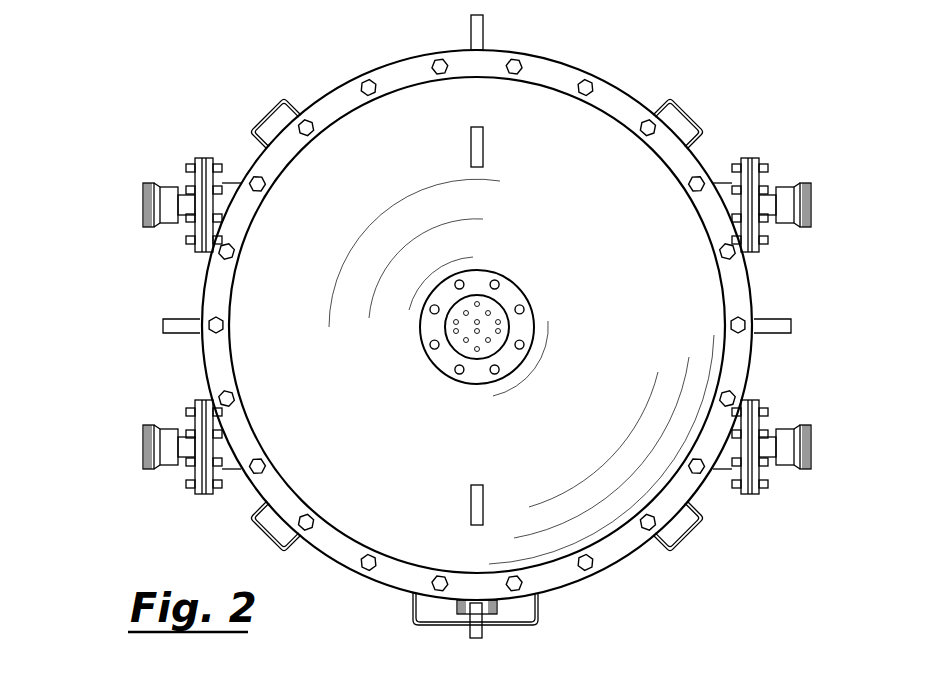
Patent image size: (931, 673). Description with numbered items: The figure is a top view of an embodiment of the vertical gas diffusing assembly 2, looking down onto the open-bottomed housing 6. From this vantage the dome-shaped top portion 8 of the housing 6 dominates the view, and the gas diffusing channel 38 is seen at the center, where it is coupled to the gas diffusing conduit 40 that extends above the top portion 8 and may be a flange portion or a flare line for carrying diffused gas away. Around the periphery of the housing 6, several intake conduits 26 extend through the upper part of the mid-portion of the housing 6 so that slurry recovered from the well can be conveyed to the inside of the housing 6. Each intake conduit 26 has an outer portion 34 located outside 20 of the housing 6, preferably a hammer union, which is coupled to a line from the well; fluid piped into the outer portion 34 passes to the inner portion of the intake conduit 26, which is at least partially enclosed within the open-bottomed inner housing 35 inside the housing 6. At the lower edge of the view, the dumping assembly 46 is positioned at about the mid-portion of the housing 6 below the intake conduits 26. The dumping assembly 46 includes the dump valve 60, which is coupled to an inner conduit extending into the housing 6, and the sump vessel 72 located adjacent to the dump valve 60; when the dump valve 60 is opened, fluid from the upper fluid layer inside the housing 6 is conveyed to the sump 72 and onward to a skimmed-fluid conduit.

The vertical gas diffusing assembly 2 is at (714, 85).
The open-bottomed housing 6 is at (580, 265).
The top portion 8 is at (557, 127).
The outside 20 is at (320, 75).
The intake conduit 26 is at (143, 207).
The outer portion 34 is at (170, 190).
The open-bottomed inner housing 35 is at (318, 660).
The gas diffusing channel 38 is at (467, 302).
The gas diffusing conduit 40 is at (510, 355).
The dumping assembly 46 is at (540, 632).
The dump valve 60 is at (462, 615).
The sump vessel 72 is at (503, 625).